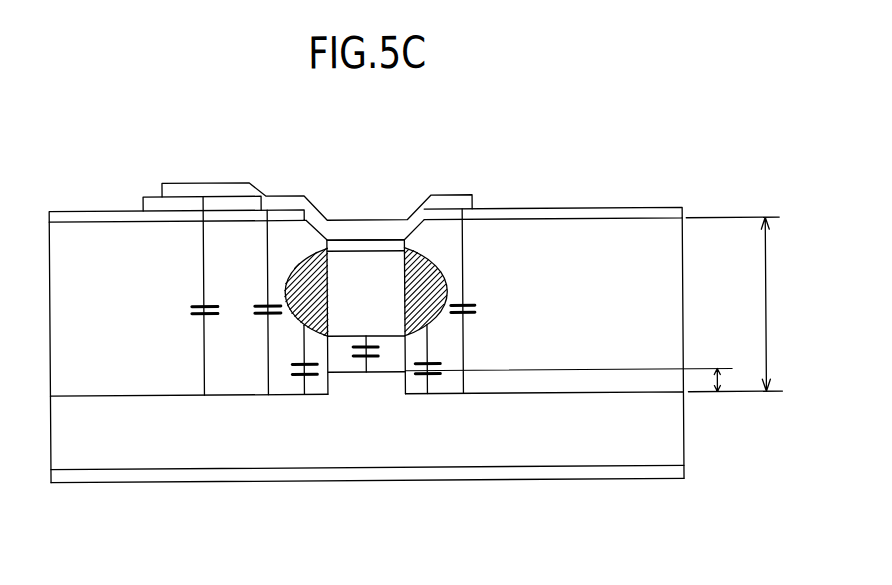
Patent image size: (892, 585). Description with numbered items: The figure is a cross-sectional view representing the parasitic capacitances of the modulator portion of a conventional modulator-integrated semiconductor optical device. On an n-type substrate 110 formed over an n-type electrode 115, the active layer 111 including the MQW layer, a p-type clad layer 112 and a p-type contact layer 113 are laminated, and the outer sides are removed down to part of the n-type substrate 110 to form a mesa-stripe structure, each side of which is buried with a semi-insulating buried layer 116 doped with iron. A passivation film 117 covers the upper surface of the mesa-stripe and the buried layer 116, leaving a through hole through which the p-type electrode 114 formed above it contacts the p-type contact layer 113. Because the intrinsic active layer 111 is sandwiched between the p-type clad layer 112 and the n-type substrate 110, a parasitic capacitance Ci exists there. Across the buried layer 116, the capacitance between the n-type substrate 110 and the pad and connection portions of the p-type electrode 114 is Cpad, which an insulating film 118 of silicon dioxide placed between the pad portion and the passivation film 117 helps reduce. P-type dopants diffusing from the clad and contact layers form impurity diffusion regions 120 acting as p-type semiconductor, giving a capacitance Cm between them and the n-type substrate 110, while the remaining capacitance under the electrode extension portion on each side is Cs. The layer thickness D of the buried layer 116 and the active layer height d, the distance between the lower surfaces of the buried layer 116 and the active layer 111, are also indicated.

The n-type substrate 110 is at (133, 458).
The active layer 111 is at (337, 363).
The p-type clad layer 112 is at (382, 287).
The p-type contact layer 113 is at (347, 247).
The p-type electrode 114 is at (238, 186).
The n-type electrode 115 is at (242, 469).
The buried layer 116 is at (127, 235).
The passivation film 117 is at (78, 215).
The insulating film 118 is at (187, 204).
The impurity diffusion regions 120 is at (303, 270).
The parasitic capacitance Cpad is at (190, 305).
The parasitic capacitance Cs is at (253, 313).
The parasitic capacitance Cm is at (288, 375).
The parasitic capacitance Ci is at (378, 358).
The layer thickness D is at (736, 304).
The active layer height d is at (593, 383).